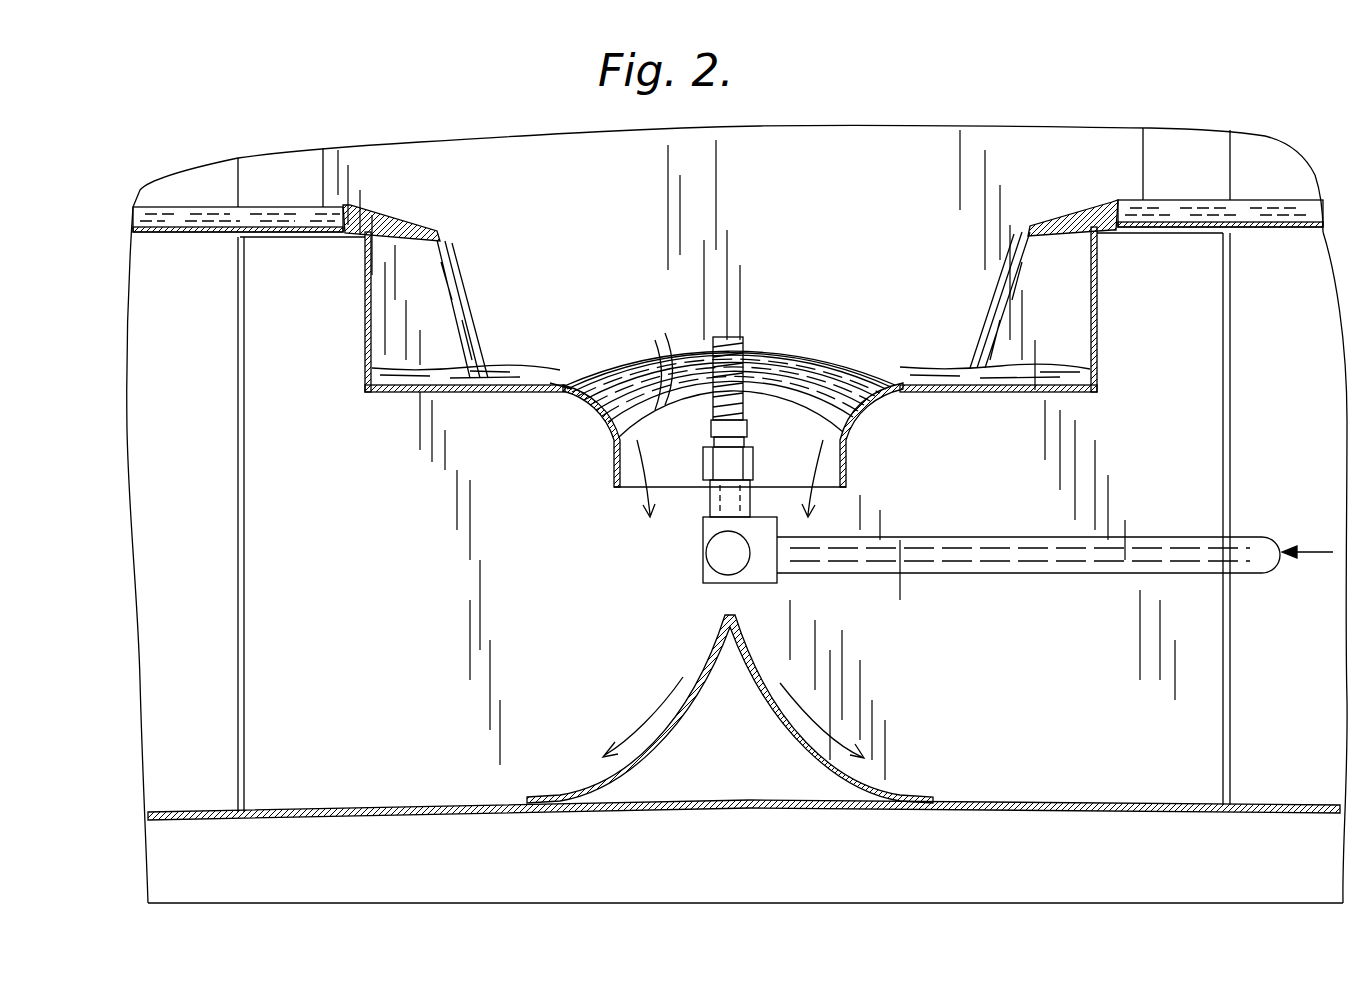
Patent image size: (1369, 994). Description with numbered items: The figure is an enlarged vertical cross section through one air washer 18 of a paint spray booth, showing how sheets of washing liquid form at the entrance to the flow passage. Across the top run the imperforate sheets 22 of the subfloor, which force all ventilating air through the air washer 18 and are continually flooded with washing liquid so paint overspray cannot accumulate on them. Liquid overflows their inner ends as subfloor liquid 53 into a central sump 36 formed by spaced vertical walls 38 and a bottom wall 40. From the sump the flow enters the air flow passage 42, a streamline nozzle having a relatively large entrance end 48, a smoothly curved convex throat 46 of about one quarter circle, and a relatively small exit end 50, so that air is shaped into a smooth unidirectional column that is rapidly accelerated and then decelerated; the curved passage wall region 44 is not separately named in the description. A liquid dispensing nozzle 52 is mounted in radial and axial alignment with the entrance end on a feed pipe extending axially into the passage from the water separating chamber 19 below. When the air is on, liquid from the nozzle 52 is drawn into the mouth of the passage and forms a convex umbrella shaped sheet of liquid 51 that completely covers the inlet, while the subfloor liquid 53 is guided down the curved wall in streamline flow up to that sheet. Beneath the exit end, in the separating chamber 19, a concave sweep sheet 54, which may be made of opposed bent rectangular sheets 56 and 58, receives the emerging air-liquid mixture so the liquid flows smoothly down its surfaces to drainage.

The air washer 18 is at (862, 486).
The water separating chamber 19 is at (415, 641).
The imperforate sheets 22 is at (175, 233).
The sump 36 is at (385, 330).
The vertical walls 38 is at (365, 295).
The bottom wall 40 is at (1003, 393).
The air flow passage 42 is at (565, 393).
The spray streams 44 is at (650, 427).
The convex wall or throat 46 is at (845, 432).
The entrance end 48 is at (560, 385).
The exit end 50 is at (683, 490).
The sheet of liquid 51 is at (647, 355).
The liquid dispensing nozzle 52 is at (742, 350).
The subfloor liquid 53 is at (508, 376).
The sweep sheet 54 is at (610, 768).
The rectangular sheet 56 is at (725, 645).
The rectangular sheet 58 is at (733, 637).